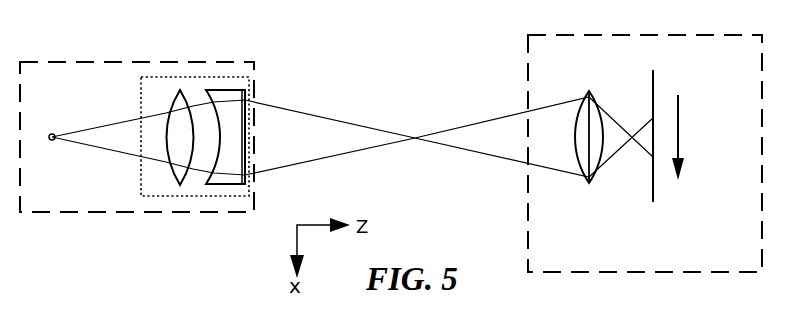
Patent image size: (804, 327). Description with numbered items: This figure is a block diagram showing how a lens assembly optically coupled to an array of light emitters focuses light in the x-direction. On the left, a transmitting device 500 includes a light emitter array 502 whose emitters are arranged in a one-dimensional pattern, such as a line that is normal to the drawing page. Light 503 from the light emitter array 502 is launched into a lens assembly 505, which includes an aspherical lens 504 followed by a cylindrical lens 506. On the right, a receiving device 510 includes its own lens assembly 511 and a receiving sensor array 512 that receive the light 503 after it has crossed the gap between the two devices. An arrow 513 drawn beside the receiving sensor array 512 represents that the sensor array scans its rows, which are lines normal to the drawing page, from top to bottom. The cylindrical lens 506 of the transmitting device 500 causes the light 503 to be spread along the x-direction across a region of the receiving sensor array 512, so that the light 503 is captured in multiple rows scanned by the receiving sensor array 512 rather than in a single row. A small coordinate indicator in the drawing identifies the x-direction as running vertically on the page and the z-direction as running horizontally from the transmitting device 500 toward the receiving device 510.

The transmitting device 500 is at (50, 213).
The light emitter array 502 is at (54, 141).
The light 503 is at (333, 156).
The aspherical lens 504 is at (178, 186).
The lens assembly 505 is at (193, 77).
The cylindrical lens 506 is at (228, 186).
The receiving device 510 is at (555, 273).
The lens assembly 511 is at (589, 184).
The receiving sensor array 512 is at (655, 81).
The arrow 513 is at (680, 135).